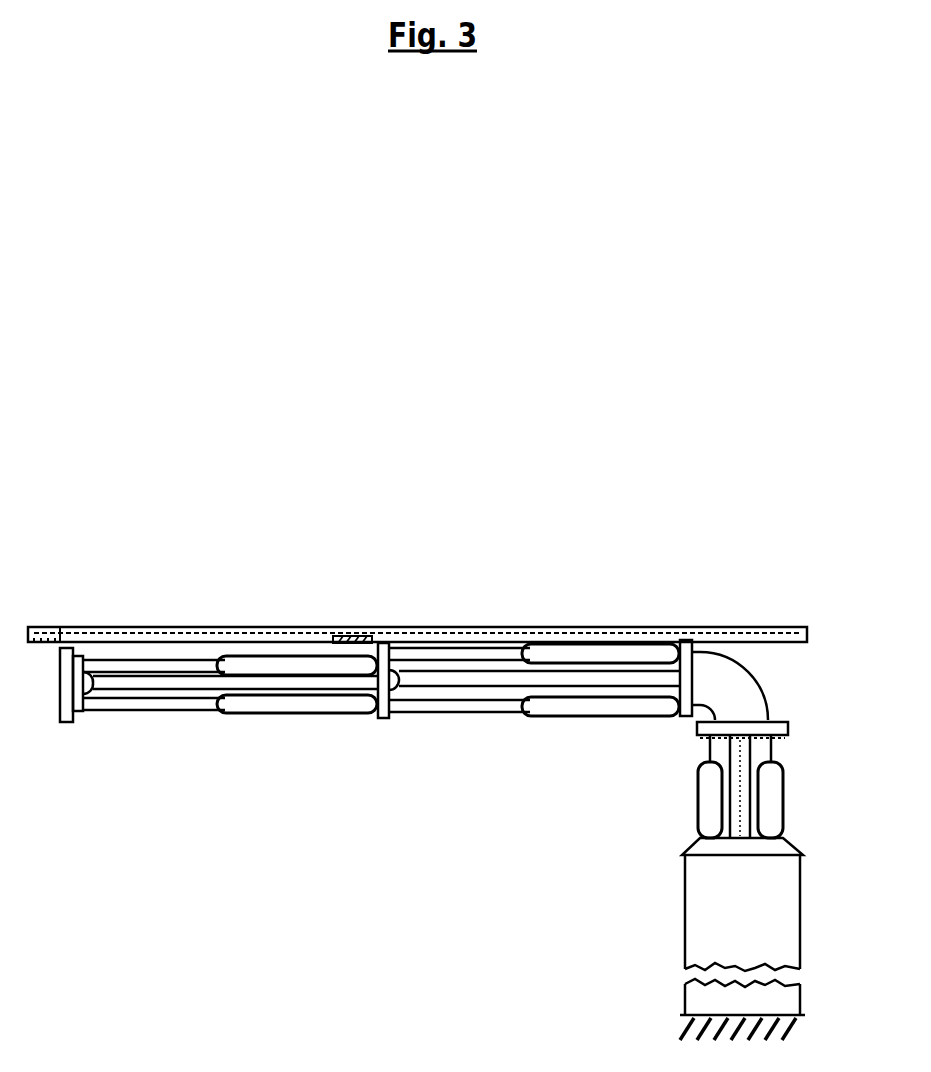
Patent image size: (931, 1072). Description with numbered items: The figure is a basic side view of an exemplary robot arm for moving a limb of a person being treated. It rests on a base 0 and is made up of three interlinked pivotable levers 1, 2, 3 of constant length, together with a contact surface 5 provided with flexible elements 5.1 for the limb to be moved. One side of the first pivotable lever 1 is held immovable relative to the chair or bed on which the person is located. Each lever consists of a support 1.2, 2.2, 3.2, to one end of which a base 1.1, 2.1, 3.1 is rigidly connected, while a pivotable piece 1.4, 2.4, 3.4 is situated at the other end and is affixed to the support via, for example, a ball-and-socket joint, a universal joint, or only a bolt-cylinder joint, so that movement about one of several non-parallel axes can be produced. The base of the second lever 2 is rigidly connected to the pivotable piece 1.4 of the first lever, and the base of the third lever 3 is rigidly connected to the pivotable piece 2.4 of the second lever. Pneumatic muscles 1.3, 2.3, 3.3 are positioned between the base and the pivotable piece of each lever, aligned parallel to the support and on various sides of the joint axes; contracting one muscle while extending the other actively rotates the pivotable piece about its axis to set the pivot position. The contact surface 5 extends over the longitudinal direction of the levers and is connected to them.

The base 0 is at (707, 910).
The first pivotable lever 1 is at (721, 760).
The base of first pivotable lever 1.1 is at (713, 847).
The support of first pivotable lever 1.2 is at (740, 815).
The pneumatic muscles of first pivotable lever 1.3 is at (710, 787).
The pivotable piece of first pivotable lever 1.4 is at (767, 721).
The second pivotable lever 2 is at (563, 702).
The base of second pivotable lever 2.1 is at (686, 660).
The support of second pivotable lever 2.2 is at (431, 683).
The pneumatic muscles of second pivotable lever 2.3 is at (587, 650).
The pivotable piece of second pivotable lever 2.4 is at (385, 700).
The third pivotable lever 3 is at (225, 758).
The base of third pivotable lever 3.1 is at (422, 808).
The support of third pivotable lever 3.2 is at (123, 690).
The pneumatic muscles of third pivotable lever 3.3 is at (243, 705).
The pivotable piece of third pivotable lever 3.4 is at (60, 722).
The contact surface 5 is at (177, 634).
The flexible elements 5.1 is at (360, 632).